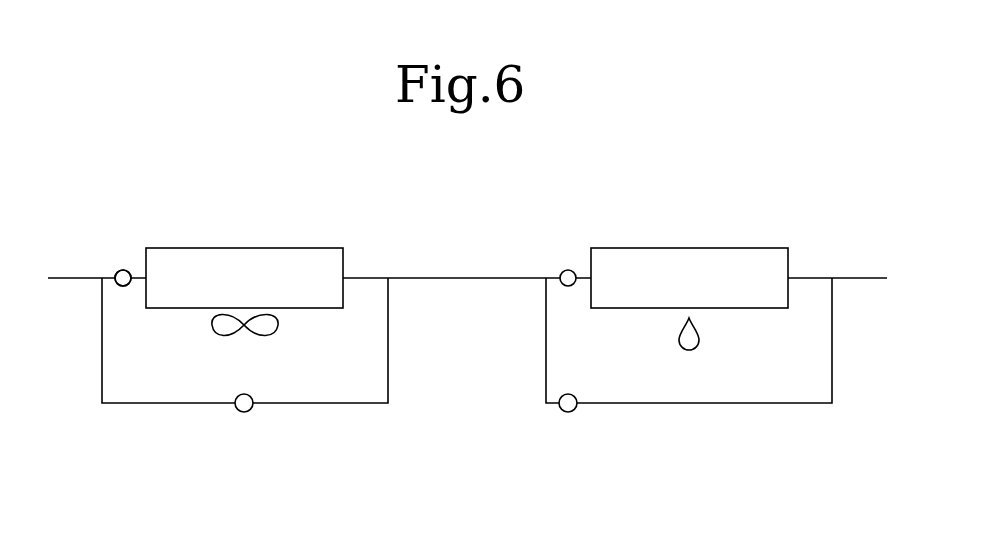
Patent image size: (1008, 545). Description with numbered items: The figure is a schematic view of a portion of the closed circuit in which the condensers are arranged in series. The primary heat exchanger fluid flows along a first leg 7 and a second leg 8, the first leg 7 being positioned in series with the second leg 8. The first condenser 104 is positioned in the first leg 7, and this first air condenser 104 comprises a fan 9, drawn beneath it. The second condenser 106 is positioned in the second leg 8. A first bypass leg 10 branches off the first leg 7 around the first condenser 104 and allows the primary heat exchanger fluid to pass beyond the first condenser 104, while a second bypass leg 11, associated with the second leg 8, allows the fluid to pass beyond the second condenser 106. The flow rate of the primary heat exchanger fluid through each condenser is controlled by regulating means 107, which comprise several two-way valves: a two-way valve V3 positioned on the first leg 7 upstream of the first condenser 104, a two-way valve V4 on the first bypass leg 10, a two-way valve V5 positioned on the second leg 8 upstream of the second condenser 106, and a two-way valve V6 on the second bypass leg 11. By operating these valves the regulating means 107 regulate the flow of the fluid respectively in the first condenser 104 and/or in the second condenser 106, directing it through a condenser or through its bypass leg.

The first leg 7 is at (361, 274).
The second leg 8 is at (807, 274).
The fan 9 is at (217, 342).
The first bypass leg 10 is at (372, 409).
The second bypass leg 11 is at (697, 411).
The first condenser 104 is at (244, 279).
The second condenser 106 is at (698, 279).
The regulating means 107 is at (116, 269).
The two-way valve V3 is at (123, 278).
The two-way valve V4 is at (245, 416).
The two-way valve V5 is at (557, 268).
The two-way valve V6 is at (568, 416).